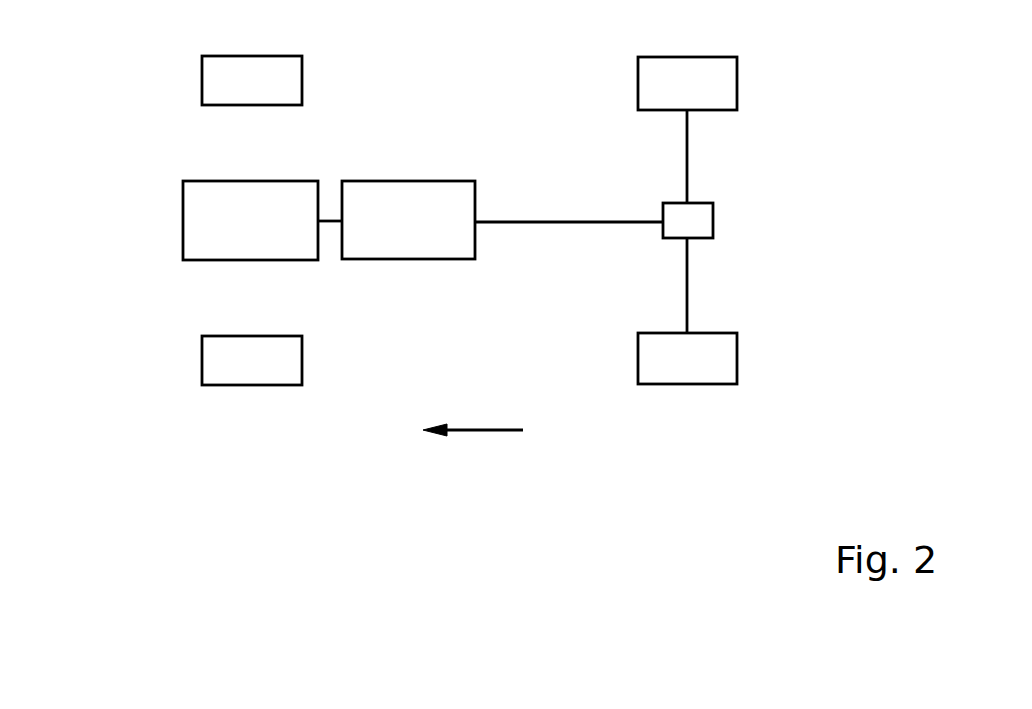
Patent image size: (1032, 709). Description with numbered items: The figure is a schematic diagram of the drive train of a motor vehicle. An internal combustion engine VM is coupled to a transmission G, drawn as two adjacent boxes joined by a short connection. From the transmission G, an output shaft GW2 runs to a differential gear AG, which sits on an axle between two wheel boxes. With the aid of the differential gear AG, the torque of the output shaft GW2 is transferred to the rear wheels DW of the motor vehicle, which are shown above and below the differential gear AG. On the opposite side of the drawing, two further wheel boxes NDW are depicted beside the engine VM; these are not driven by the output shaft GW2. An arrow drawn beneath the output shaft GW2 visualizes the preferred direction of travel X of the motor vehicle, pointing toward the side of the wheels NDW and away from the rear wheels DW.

The internal combustion engine VM is at (183, 228).
The transmission G is at (378, 259).
The output shaft GW2 is at (540, 222).
The differential gear AG is at (700, 203).
The rear wheels DW is at (737, 90).
The non-driven wheels NDW is at (202, 92).
The direction of travel X is at (473, 410).